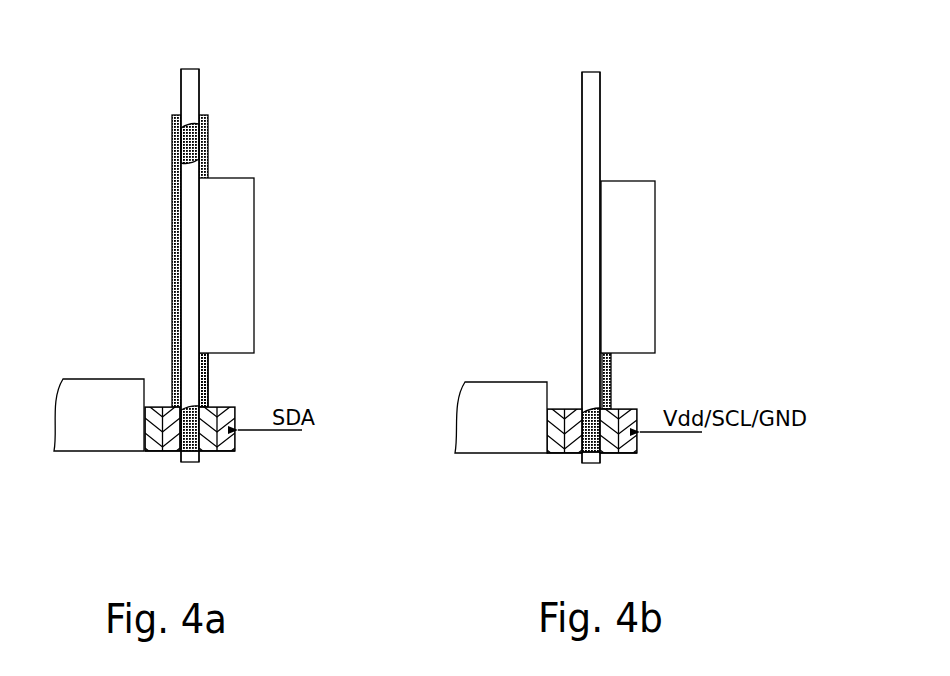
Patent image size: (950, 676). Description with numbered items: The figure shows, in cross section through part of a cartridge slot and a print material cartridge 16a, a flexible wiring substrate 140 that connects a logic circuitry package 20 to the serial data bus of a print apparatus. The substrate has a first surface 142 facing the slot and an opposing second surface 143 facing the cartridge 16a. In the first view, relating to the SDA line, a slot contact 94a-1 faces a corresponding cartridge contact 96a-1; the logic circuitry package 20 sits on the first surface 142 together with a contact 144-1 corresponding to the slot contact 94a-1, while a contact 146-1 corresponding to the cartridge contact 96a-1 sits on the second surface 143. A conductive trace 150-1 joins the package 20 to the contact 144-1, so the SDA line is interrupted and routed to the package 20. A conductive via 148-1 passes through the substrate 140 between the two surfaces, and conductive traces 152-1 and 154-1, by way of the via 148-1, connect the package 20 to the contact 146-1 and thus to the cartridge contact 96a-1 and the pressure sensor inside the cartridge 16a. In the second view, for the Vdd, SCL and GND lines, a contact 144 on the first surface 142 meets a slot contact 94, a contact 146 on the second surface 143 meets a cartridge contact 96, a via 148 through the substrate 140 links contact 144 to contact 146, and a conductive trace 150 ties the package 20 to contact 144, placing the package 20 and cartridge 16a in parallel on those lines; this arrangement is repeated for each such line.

In FIG. 4A, the flexible wiring substrate 140 is at (198, 75).
In FIG. 4B, the flexible wiring substrate 140 is at (596, 75).
In FIG. 4A, the first surface 142 is at (199, 88).
In FIG. 4B, the first surface 142 is at (600, 90).
In FIG. 4A, the second surface 143 is at (181, 88).
In FIG. 4B, the second surface 143 is at (582, 90).
In FIG. 4A, the conductive via 148-1 is at (193, 138).
In FIG. 4A, the conductive trace 152-1 is at (207, 147).
In FIG. 4A, the conductive trace 154-1 is at (175, 183).
In FIG. 4A, the logic circuitry package 20 is at (237, 278).
In FIG. 4B, the logic circuitry package 20 is at (641, 278).
In FIG. 4A, the conductive trace 150-1 is at (208, 373).
In FIG. 4B, the conductive trace 150 is at (612, 373).
In FIG. 4A, the print material cartridge 16a is at (122, 427).
In FIG. 4B, the print material cartridge 16a is at (523, 431).
In FIG. 4A, the contact 96a-1 is at (158, 452).
In FIG. 4A, the contact 146-1 is at (173, 452).
In FIG. 4A, the via 148 is at (191, 440).
In FIG. 4B, the via 148 is at (593, 447).
In FIG. 4A, the contact 144-1 is at (208, 452).
In FIG. 4A, the contact 94a-1 is at (227, 452).
In FIG. 4B, the contact 96 is at (560, 455).
In FIG. 4B, the contact 146 is at (576, 455).
In FIG. 4B, the contact 144 is at (610, 455).
In FIG. 4B, the contact 94 is at (630, 455).